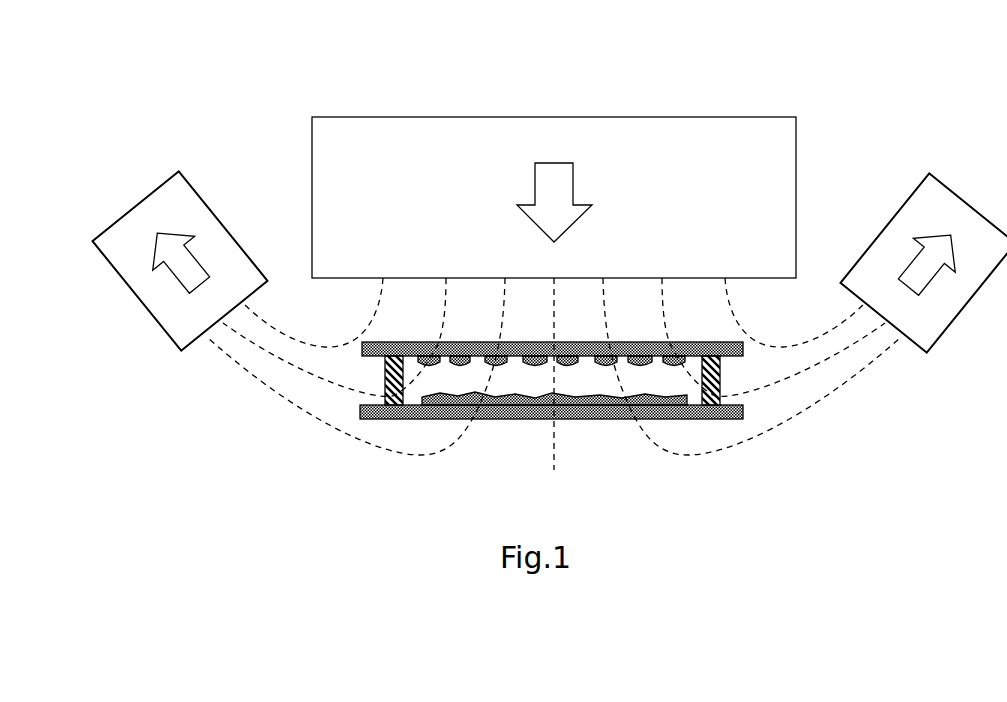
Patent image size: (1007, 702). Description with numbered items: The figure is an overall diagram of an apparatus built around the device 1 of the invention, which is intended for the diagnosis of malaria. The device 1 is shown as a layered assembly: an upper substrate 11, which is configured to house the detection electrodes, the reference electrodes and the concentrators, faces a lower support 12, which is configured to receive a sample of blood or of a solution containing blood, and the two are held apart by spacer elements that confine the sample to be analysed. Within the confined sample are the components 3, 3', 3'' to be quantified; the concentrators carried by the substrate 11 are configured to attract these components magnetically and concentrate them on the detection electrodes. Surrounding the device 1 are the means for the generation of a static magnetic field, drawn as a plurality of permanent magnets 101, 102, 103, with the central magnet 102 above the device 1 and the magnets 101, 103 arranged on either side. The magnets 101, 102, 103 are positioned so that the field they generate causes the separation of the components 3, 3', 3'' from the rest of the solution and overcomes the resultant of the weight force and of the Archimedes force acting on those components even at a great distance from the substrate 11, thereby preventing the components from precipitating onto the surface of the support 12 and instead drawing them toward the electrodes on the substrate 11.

The device 1 is at (551, 401).
The substrate 11 is at (390, 358).
The support 12 is at (528, 410).
The component to be quantified 3 is at (487, 330).
The component to be quantified 3' is at (554, 330).
The component to be quantified 3'' is at (657, 330).
The permanent magnet 101 is at (197, 217).
The permanent magnet 102 is at (437, 144).
The permanent magnet 103 is at (902, 220).